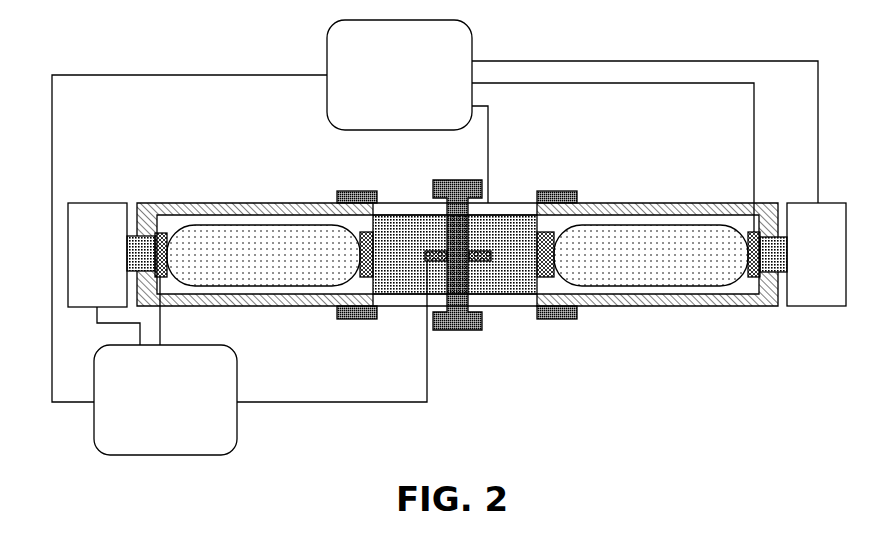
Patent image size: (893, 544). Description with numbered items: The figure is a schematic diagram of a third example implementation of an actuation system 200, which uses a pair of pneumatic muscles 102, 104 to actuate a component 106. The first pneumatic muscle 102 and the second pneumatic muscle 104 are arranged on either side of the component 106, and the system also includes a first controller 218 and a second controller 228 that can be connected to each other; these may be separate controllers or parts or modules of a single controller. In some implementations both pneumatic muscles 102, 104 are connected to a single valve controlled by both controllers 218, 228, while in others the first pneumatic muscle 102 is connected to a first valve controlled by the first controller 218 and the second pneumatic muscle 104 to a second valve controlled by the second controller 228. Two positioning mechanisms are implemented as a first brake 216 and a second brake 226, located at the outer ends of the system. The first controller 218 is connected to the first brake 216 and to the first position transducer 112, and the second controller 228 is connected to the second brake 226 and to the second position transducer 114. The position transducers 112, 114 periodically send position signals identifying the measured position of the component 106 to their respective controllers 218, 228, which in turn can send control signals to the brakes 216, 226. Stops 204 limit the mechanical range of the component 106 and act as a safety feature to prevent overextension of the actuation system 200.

The actuation system 200 is at (130, 37).
The first pneumatic muscle 102 is at (241, 264).
The second pneumatic muscle 104 is at (643, 264).
The component 106 is at (460, 330).
The first position transducer 112 is at (440, 250).
The second position transducer 114 is at (480, 263).
The stops 204 is at (360, 192).
The first brake 216 is at (104, 274).
The first controller 218 is at (260, 358).
The second brake 226 is at (816, 254).
The second controller 228 is at (435, 211).